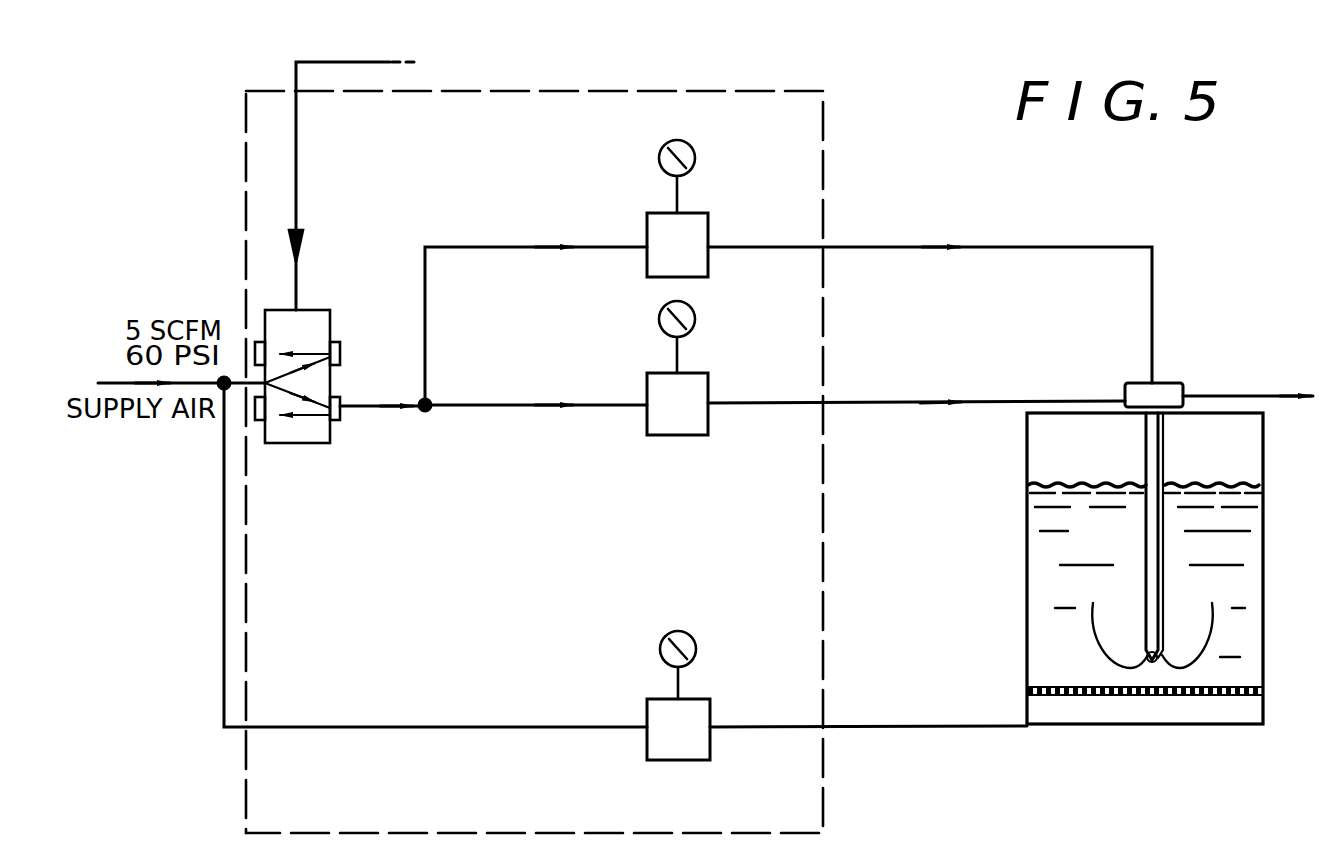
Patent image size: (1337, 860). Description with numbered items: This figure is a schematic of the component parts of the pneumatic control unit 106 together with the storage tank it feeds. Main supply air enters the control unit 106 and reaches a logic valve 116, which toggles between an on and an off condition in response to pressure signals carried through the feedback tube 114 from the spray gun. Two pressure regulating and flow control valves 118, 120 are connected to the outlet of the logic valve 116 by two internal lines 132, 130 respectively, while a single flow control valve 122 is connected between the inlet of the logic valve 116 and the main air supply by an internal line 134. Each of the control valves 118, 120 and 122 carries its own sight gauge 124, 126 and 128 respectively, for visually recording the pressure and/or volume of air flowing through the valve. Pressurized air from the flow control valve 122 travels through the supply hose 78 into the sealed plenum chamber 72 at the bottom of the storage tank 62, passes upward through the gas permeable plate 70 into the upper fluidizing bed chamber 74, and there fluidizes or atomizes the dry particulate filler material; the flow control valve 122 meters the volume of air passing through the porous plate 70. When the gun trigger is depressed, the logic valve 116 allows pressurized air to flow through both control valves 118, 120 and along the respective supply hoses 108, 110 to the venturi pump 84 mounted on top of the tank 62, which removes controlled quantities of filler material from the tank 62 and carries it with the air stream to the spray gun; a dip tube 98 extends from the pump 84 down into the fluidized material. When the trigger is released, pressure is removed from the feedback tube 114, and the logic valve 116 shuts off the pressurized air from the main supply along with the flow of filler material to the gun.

The pneumatic control unit 106 is at (745, 91).
The feedback tube 114 is at (297, 133).
The logic valve 116 is at (319, 318).
The internal line 130 is at (493, 247).
The internal line 132 is at (483, 404).
The internal line 134 is at (410, 727).
The pressure regulating and flow control valve 120 is at (708, 228).
The pressure regulating and flow control valve 118 is at (708, 392).
The flow control valve 122 is at (710, 712).
The sight gauge 126 is at (689, 150).
The sight gauge 124 is at (660, 326).
The sight gauge 128 is at (660, 666).
The supply hose 110 is at (995, 247).
The supply hose 108 is at (985, 402).
The supply hose 78 is at (868, 727).
The venturi pump 84 is at (1170, 390).
The storage tank 62 is at (1263, 455).
The upper fluidizing bed chamber 74 is at (1230, 548).
The dip tube 98 is at (1143, 533).
The gas permeable plate 70 is at (1105, 695).
The lower plenum chamber 72 is at (1242, 705).